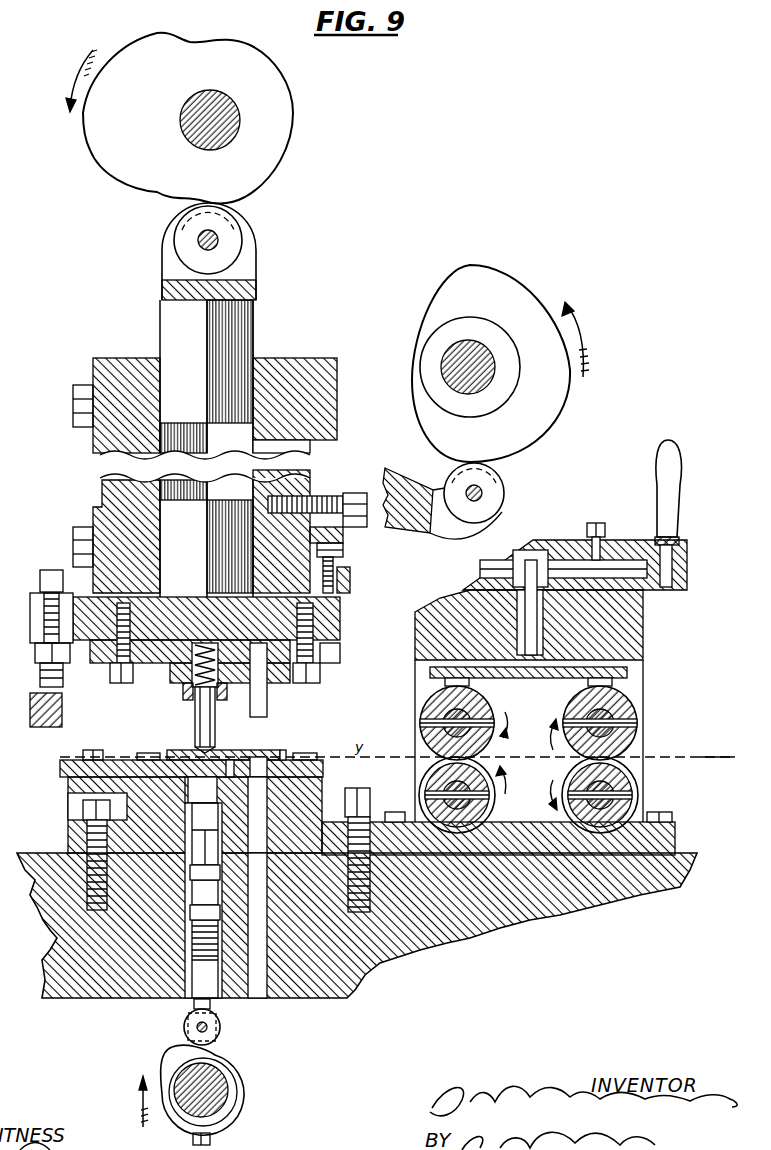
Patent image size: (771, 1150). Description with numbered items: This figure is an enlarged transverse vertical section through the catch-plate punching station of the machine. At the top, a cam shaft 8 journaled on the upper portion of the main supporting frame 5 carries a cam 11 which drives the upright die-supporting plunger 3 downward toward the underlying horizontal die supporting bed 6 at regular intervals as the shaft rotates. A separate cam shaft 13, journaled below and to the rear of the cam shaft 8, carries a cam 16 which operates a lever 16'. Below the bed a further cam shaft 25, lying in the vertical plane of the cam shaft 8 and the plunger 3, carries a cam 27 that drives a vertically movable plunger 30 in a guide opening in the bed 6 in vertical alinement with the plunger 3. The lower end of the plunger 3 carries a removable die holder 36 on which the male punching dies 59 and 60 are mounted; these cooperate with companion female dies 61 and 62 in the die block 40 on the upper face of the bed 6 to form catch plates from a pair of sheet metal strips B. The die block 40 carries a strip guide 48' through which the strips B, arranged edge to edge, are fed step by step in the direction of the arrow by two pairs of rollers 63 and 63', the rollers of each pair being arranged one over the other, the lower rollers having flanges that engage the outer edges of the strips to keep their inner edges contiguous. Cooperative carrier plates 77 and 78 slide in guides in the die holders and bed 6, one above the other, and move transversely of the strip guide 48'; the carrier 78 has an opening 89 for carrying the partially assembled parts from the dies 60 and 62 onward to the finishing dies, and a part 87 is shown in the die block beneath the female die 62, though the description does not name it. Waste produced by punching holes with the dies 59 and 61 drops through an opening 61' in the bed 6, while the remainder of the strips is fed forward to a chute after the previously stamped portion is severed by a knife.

The upright die-supporting plunger 3 is at (218, 376).
The main supporting frame 5 is at (103, 467).
The die supporting bed 6 is at (62, 939).
The cam shaft 8 is at (227, 128).
The cam 11 is at (100, 148).
The cam shaft 13 is at (452, 366).
The cam 16 is at (491, 363).
The lever 16' is at (443, 514).
The cam shaft 25 is at (220, 1090).
The cam 27 is at (158, 1061).
The vertically movable plunger 30 is at (188, 1007).
The die holder 36 is at (206, 648).
The die supporting block 40 is at (323, 770).
The strip guide 48' is at (301, 746).
The male punching die 59 is at (267, 703).
The male punching die 60 is at (195, 713).
The female die 61 is at (261, 753).
The opening 61' is at (264, 943).
The female die 62 is at (200, 763).
The feed rollers 63 is at (619, 759).
The feed rollers 63' is at (477, 759).
The carrier plate 77 is at (163, 760).
The carrier plate 78 is at (230, 775).
The die bushing 87 is at (202, 790).
The opening 89 is at (259, 815).
The sheet metal strips B is at (717, 749).